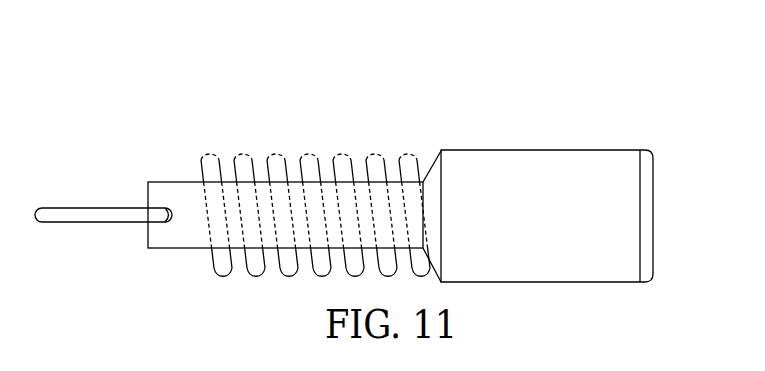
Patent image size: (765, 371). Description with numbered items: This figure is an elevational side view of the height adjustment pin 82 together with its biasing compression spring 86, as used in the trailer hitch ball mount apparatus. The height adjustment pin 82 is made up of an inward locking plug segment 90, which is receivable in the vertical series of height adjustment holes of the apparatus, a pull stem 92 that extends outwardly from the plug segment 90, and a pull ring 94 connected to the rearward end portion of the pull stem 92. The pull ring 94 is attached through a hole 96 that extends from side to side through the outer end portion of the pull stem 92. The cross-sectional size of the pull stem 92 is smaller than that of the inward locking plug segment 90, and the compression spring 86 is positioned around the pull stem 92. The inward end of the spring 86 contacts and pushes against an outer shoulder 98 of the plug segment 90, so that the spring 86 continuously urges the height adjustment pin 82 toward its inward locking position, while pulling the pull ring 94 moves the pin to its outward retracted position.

The height adjustment pin 82 is at (225, 72).
The compression spring 86 is at (308, 152).
The inward locking plug segment 90 is at (613, 150).
The pull stem 92 is at (163, 181).
The pull ring 94 is at (73, 207).
The hole 96 is at (168, 228).
The outer shoulder 98 is at (437, 158).